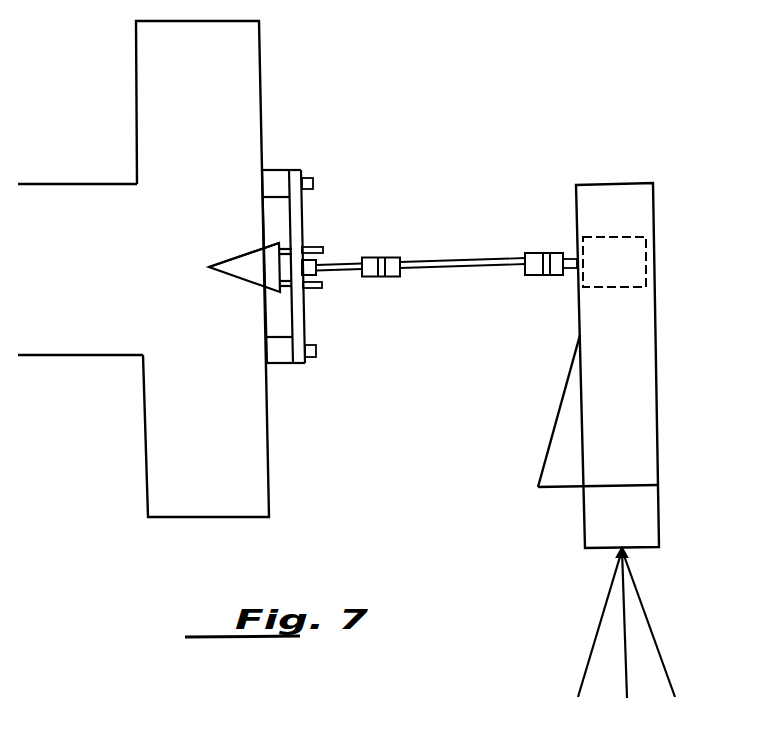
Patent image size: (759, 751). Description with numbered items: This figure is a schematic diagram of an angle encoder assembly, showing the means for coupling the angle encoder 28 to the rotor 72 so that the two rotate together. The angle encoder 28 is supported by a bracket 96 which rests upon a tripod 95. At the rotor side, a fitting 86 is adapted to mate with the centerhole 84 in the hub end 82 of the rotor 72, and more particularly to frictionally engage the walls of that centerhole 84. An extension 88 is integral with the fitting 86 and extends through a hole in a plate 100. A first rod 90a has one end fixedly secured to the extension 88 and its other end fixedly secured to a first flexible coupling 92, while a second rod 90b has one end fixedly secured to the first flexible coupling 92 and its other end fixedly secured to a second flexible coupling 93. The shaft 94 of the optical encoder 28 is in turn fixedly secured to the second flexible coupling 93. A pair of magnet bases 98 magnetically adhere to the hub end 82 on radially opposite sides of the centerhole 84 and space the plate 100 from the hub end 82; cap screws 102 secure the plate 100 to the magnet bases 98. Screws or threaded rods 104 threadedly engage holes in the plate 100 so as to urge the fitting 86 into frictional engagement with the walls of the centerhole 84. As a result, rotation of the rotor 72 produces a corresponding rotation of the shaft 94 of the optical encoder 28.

The rotor 72 is at (77, 212).
The hub end 82 is at (245, 75).
The centerhole 84 is at (234, 258).
The fitting 86 is at (250, 268).
The extension 88 is at (315, 275).
The first rod 90a is at (343, 267).
The second rod 90b is at (450, 268).
The first flexible coupling 92 is at (398, 278).
The second flexible coupling 93 is at (529, 258).
The shaft 94 is at (570, 273).
The tripod 95 is at (663, 538).
The bracket 96 is at (638, 422).
The magnet bases 98 is at (275, 171).
The plate 100 is at (298, 178).
The cap screws 102 is at (313, 178).
The screws or threaded rods 104 is at (325, 248).
The angle encoder 28 is at (635, 268).